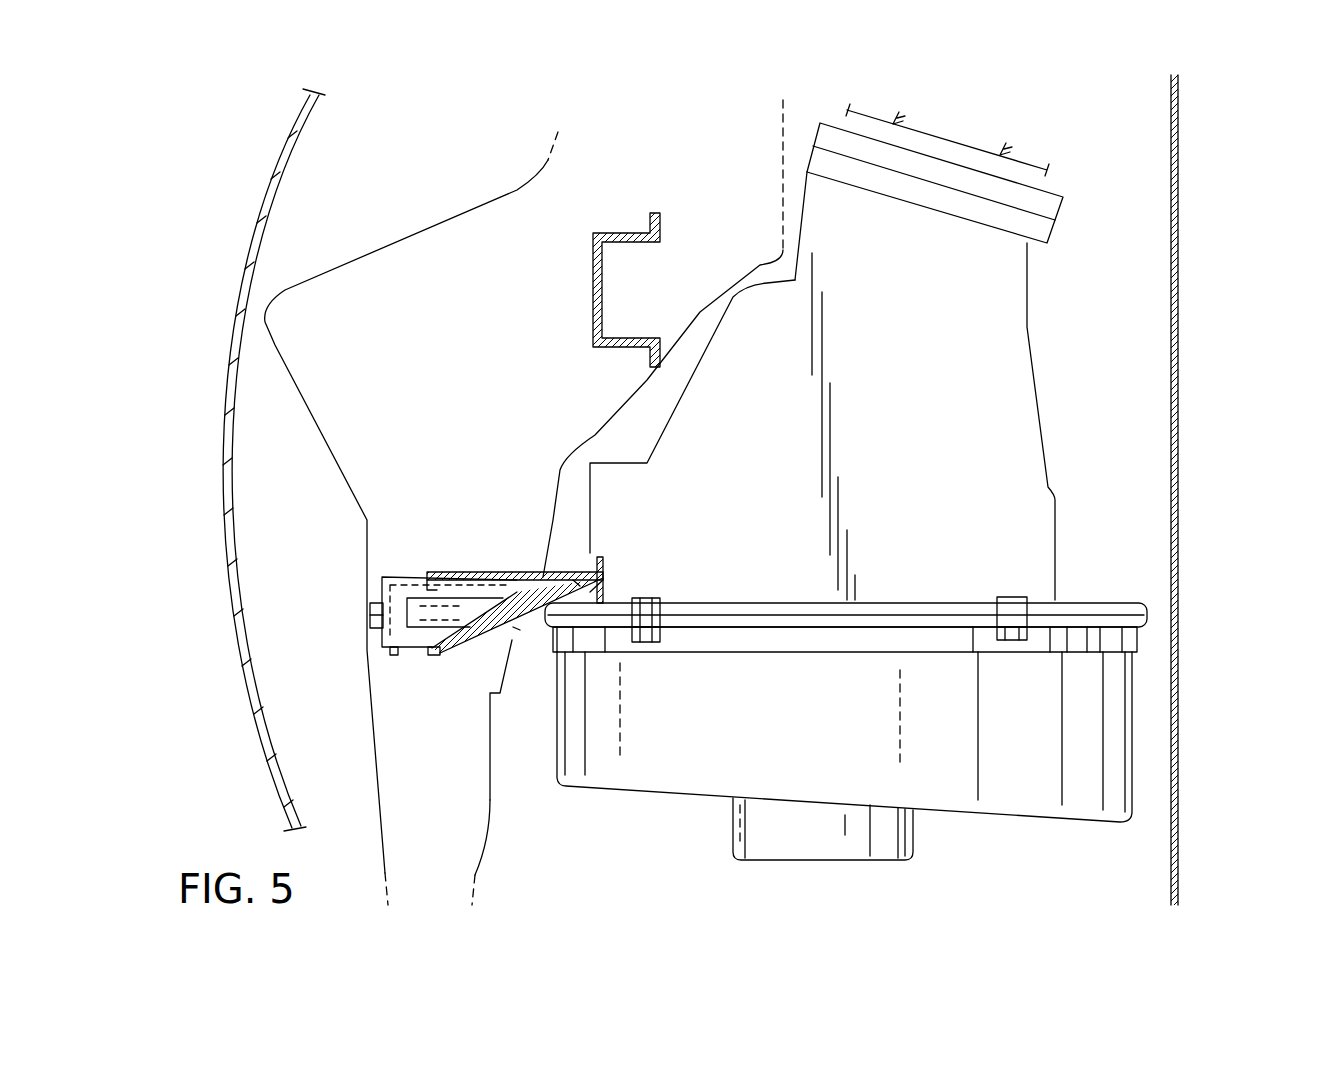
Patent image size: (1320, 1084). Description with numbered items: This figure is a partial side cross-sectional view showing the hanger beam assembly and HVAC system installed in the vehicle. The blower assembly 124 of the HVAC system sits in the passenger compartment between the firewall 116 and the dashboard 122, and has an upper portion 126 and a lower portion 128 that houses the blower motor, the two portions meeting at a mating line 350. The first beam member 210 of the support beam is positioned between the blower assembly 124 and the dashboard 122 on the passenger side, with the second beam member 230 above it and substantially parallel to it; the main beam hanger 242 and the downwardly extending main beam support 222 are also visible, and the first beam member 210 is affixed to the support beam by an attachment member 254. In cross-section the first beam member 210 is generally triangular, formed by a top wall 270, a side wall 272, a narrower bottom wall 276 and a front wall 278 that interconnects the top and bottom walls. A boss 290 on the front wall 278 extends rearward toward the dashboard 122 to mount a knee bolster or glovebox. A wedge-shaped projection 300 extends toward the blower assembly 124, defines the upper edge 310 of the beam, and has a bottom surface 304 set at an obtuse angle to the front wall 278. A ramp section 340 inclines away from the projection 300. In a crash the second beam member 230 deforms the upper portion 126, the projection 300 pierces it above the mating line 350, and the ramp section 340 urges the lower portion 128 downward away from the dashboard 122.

The firewall 116 is at (1178, 302).
The dashboard 122 is at (228, 466).
The blower assembly 124 is at (1050, 463).
The upper portion 126 is at (1003, 326).
The lower portion 128 is at (955, 793).
The first beam member 210 is at (431, 665).
The main beam support 222 is at (465, 840).
The second beam member 230 is at (593, 288).
The main beam hanger 242 is at (358, 283).
The attachment member 254 is at (370, 612).
The top wall 270 is at (485, 570).
The side wall 272 is at (450, 575).
The bottom wall 276 is at (442, 654).
The front wall 278 is at (509, 626).
The boss 290 is at (420, 625).
The projection 300 is at (590, 558).
The bottom surface 304 is at (573, 582).
The upper edge 310 is at (602, 586).
The ramp section 340 is at (513, 627).
The mating line 350 is at (878, 617).